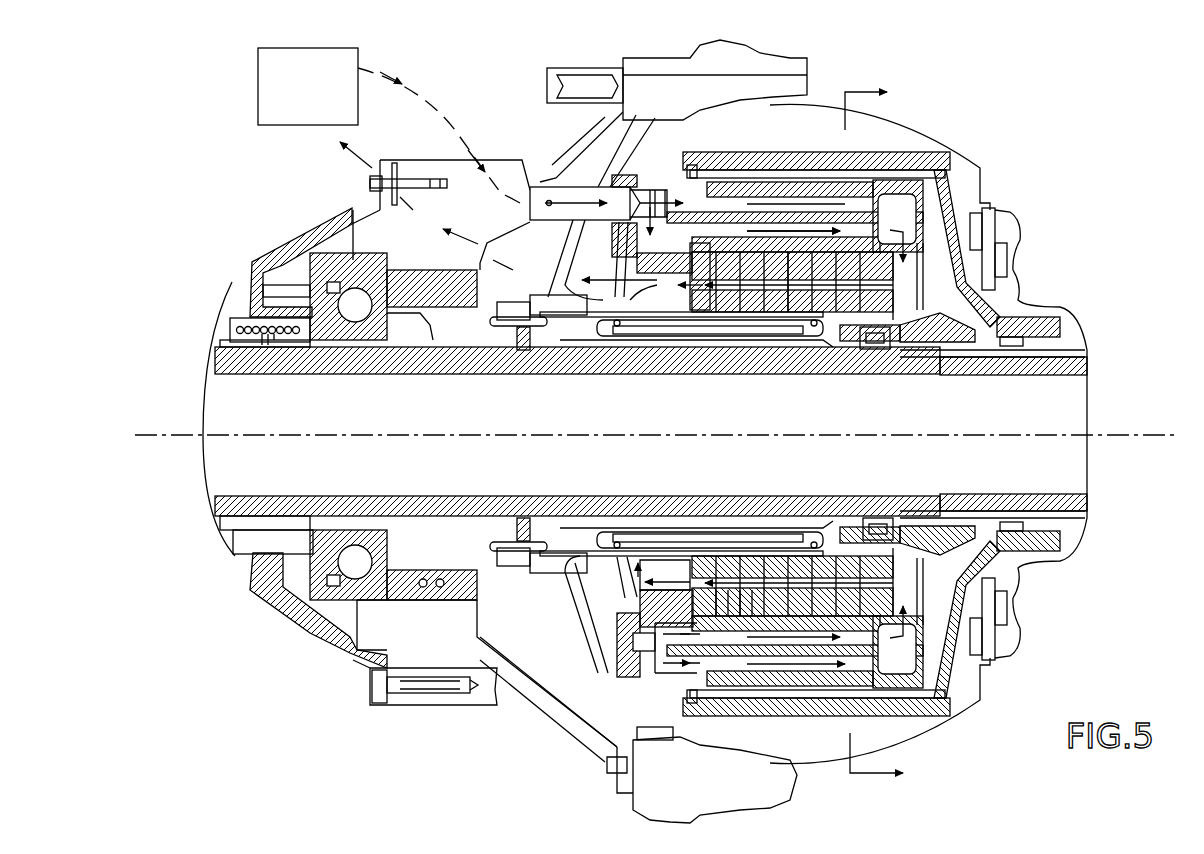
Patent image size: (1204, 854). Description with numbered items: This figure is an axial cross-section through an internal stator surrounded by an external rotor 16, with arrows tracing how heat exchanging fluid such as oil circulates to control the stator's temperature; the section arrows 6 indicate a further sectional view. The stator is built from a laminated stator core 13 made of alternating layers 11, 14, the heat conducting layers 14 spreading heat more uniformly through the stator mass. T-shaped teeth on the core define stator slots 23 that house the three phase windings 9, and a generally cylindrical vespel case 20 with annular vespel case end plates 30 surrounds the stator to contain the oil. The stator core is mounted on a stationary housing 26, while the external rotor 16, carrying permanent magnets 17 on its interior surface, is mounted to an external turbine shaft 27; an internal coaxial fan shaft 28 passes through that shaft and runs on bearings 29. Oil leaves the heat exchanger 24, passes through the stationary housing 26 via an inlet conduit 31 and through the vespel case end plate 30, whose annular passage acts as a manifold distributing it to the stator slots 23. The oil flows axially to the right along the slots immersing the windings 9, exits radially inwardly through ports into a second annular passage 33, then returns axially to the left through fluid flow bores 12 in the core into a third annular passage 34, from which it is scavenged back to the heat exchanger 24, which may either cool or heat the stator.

The section line / viewing direction arrows 6 is at (884, 435).
The windings 9 is at (912, 217).
The layers 11 is at (703, 557).
The fluid flow bores 12 is at (832, 283).
The stator core 13 is at (795, 290).
The heat conducting layers 14 is at (713, 557).
The external rotor 16 is at (827, 167).
The permanent magnets 17 is at (717, 170).
The vespel case 20 is at (788, 177).
The stator slots 23 is at (830, 197).
The heat exchanger 24 is at (389, 159).
The stationary housing 26 is at (620, 93).
The external turbine shaft 27 is at (1062, 330).
The internal coaxial fan shaft 28 is at (1057, 374).
The bearings 29 is at (357, 320).
The vespel case end plates 30 is at (940, 193).
The inlet conduit 31 is at (533, 187).
The second annular passage 33 is at (908, 340).
The third annular passage 34 is at (660, 553).